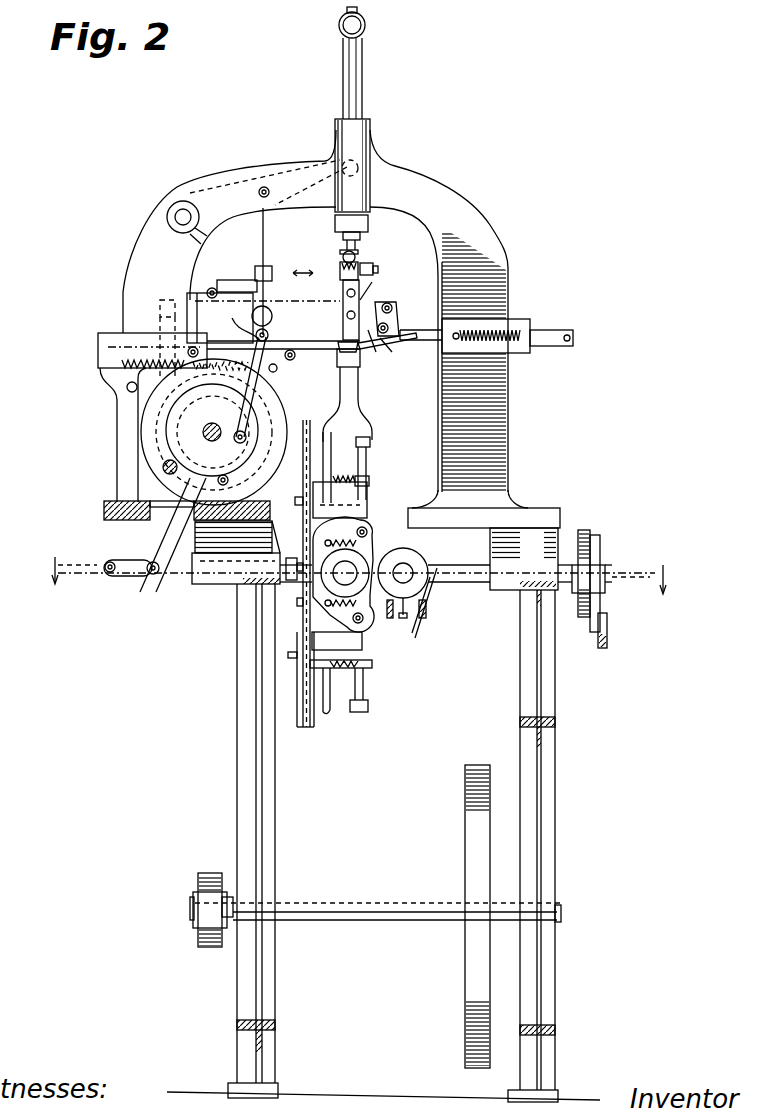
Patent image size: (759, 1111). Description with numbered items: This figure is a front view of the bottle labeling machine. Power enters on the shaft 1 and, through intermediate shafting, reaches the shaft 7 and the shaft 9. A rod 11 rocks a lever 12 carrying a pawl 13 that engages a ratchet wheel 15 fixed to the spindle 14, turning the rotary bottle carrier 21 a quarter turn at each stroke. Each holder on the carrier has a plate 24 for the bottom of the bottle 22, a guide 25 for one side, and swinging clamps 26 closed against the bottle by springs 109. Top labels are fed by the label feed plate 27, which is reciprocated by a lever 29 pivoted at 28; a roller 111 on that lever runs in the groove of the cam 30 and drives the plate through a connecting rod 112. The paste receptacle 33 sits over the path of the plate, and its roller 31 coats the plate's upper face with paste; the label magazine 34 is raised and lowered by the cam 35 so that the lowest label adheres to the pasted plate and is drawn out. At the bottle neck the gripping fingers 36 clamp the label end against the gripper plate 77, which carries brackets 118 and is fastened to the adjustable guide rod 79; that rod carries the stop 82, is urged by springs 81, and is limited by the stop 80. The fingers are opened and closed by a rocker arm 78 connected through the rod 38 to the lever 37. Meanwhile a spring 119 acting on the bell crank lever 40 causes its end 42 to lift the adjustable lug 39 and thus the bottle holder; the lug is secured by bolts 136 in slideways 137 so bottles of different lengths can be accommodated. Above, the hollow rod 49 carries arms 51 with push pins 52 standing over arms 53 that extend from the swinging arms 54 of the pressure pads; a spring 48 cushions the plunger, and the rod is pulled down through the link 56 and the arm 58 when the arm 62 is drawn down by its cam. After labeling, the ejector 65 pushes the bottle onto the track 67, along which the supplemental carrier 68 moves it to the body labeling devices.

The shaft 1 is at (358, 908).
The shaft 7 is at (363, 575).
The shaft 9 is at (207, 429).
The rod 11 is at (608, 643).
The lever 12 is at (615, 609).
The pawl 13 is at (581, 535).
The spindle 14 is at (478, 584).
The ratchet wheel 15 is at (582, 616).
The rotary bottle carrier 21 is at (311, 728).
The bottle 22 is at (437, 554).
The plate 24 is at (367, 517).
The guide 25 is at (334, 441).
The movable clamps 26 is at (372, 443).
The label feed plate 27 is at (355, 395).
The pivot 28 is at (163, 467).
The lever 29 is at (189, 352).
The cam 30 is at (142, 413).
The paste applying roller 31 is at (229, 316).
The paste receptacle 33 is at (253, 300).
The label magazine 34 is at (276, 264).
The cam 35 is at (213, 431).
The gripping fingers 36 is at (378, 301).
The lever 37 is at (161, 318).
The rod 38 is at (326, 306).
The adjustable lug 39 is at (300, 484).
The bell crank lever 40 is at (250, 524).
The end of bell crank lever 42 is at (299, 506).
The spring 48 is at (366, 343).
The hollow rod 49 is at (363, 88).
The arms 51 is at (369, 234).
The push pins 52 is at (362, 254).
The arms 53 is at (343, 261).
The swinging arms 54 is at (377, 286).
The link 56 is at (267, 222).
The arm 58 is at (250, 182).
The arm 62 is at (116, 410).
The ejector 65 is at (148, 588).
The track 67 is at (368, 637).
The supplemental carrier 68 is at (404, 603).
The gripper plate 77 is at (381, 350).
The rocker arm 78 is at (397, 306).
The guide rod 79 is at (428, 343).
The stop 80 is at (547, 330).
The springs 81 is at (522, 347).
The stop 82 is at (399, 317).
The springs 109 is at (369, 543).
The roller 111 is at (197, 521).
The connecting rod 112 is at (301, 396).
The brackets 118 is at (388, 340).
The spring 119 is at (122, 359).
The screws or bolts 136 is at (290, 578).
The slideways 137 is at (306, 432).